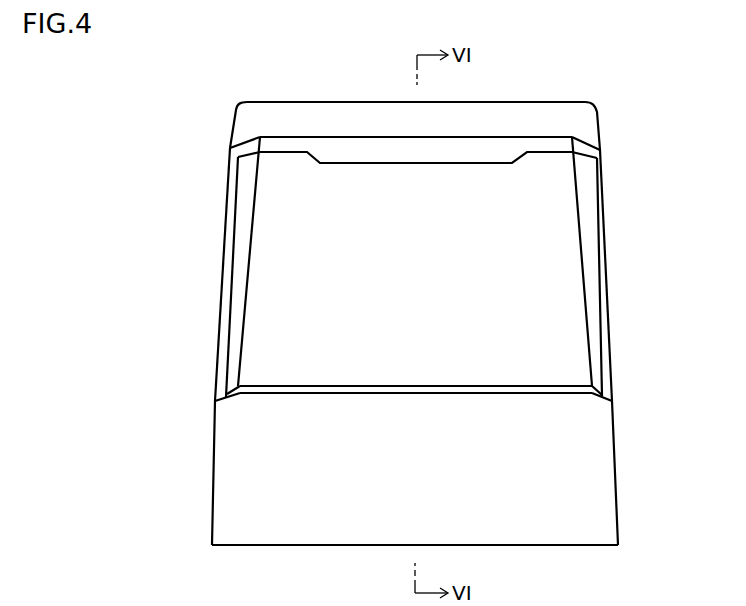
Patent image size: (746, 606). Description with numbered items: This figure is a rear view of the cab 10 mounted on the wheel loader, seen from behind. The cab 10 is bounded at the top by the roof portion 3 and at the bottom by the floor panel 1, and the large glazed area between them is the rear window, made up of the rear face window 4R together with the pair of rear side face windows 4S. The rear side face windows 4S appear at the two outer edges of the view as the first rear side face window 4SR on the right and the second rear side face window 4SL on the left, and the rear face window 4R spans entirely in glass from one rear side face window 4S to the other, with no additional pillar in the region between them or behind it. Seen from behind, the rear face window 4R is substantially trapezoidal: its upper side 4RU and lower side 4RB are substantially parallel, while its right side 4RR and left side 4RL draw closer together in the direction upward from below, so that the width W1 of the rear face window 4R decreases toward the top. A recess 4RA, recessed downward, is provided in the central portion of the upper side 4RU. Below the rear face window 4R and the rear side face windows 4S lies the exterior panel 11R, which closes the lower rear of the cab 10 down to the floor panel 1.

The floor panel 1 is at (298, 546).
The roof portion 3 is at (360, 100).
The cab 10 is at (553, 97).
The exterior panel 11R is at (511, 522).
The rear face window 4R is at (550, 308).
The upper side 4RU is at (552, 150).
The recess 4RA is at (468, 164).
The left side 4RL is at (247, 273).
The right side 4RR is at (584, 272).
The lower side 4RB is at (552, 388).
The rear side face window 4S is at (245, 195).
The second rear side face window 4SL is at (194, 277).
The first rear side face window 4SR is at (640, 277).
The width W1 is at (579, 237).